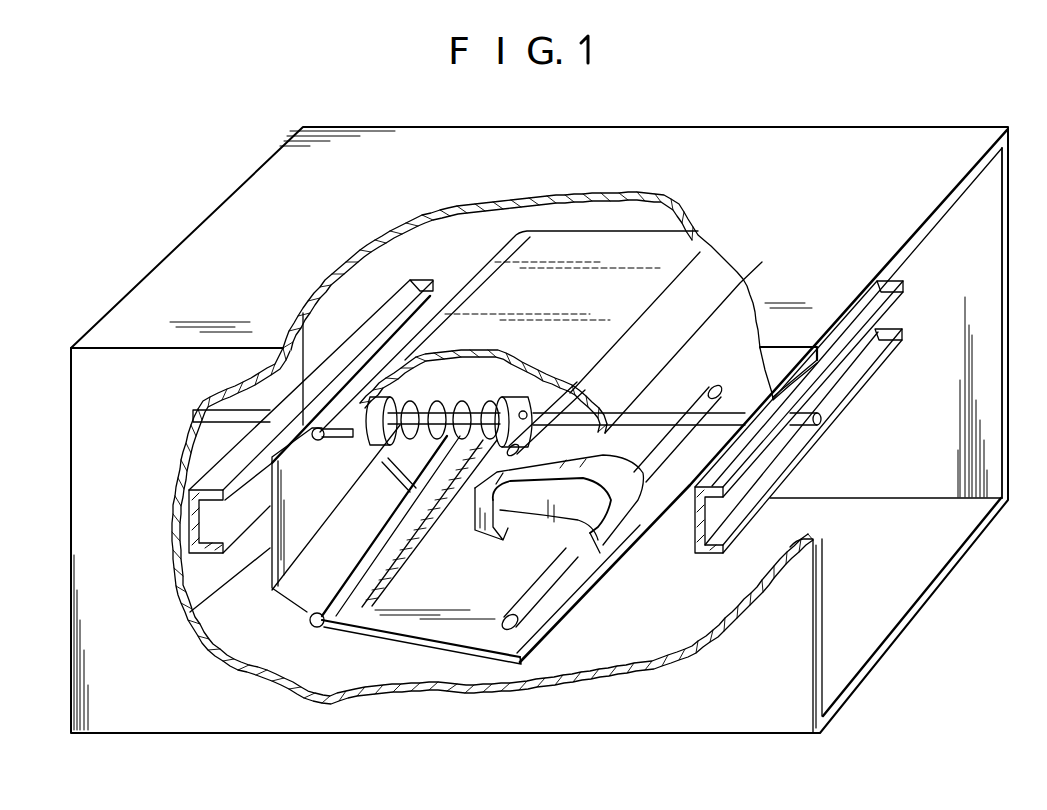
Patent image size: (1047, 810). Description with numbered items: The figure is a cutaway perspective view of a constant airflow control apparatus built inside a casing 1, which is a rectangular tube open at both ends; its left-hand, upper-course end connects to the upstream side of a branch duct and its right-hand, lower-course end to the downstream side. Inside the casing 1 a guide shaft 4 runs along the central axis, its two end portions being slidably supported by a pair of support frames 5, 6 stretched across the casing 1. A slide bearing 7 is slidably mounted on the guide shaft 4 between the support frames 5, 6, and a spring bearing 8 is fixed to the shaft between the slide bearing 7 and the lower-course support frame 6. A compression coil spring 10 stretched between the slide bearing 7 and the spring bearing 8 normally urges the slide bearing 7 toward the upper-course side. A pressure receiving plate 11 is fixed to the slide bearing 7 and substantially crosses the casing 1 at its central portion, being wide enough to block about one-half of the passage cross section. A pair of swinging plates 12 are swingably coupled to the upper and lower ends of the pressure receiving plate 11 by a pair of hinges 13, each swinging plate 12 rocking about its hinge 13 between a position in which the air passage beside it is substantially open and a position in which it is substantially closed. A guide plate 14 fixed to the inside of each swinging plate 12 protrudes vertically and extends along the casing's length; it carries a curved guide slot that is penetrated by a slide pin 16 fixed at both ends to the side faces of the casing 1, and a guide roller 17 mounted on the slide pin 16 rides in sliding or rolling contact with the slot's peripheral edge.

The casing 1 is at (626, 142).
The guide shaft 4 is at (222, 409).
The support frame 5 is at (200, 556).
The support frame 6 is at (718, 553).
The slide bearing 7 is at (366, 449).
The spring bearing 8 is at (496, 484).
The compression coil spring 10 is at (420, 434).
The pressure receiving plate 11 is at (263, 603).
The swinging plate 12 is at (680, 212).
The hinge 13 is at (318, 428).
The guide plate 14 is at (507, 522).
The slide pin 16 is at (584, 402).
The guide roller 17 is at (605, 548).